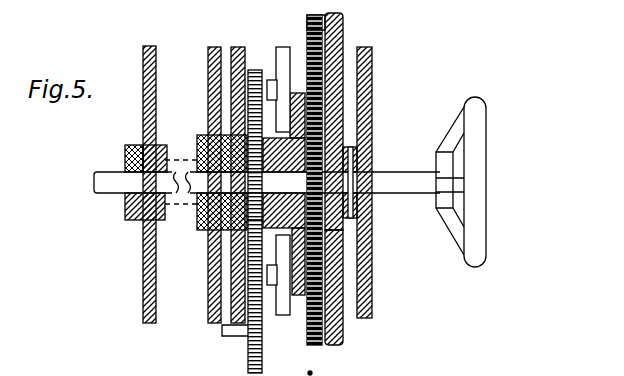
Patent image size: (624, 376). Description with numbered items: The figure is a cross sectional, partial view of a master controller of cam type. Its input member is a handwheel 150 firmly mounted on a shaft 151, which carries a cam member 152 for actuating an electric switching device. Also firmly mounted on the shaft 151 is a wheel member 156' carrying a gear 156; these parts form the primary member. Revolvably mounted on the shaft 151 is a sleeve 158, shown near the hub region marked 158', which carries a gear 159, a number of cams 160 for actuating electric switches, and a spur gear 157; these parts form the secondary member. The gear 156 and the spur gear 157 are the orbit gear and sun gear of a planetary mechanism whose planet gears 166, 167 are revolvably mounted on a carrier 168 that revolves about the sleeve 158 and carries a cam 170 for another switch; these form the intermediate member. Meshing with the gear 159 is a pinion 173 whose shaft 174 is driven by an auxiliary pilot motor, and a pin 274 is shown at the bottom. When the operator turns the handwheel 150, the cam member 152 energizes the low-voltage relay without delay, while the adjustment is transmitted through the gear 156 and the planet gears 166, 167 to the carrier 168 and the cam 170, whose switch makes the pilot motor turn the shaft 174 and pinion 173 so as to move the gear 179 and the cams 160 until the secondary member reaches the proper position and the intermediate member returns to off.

The handwheel 150 is at (481, 160).
The shaft 151 is at (395, 172).
The cam member 152 is at (372, 99).
The gear 156 is at (292, 183).
The wheel member 156' is at (347, 23).
The spur gear 157 is at (352, 146).
The sleeve 158 is at (161, 169).
The hub sleeve 158' is at (284, 194).
The gear 159 is at (237, 268).
The cams 160 is at (157, 255).
The planet gear 166 is at (338, 44).
The planet gear 167 is at (343, 318).
The carrier 168 is at (237, 118).
The cam 170 is at (278, 47).
The pinion 173 is at (250, 370).
The shaft 174 is at (222, 332).
The gear 179 is at (253, 70).
The pin 274 is at (311, 373).